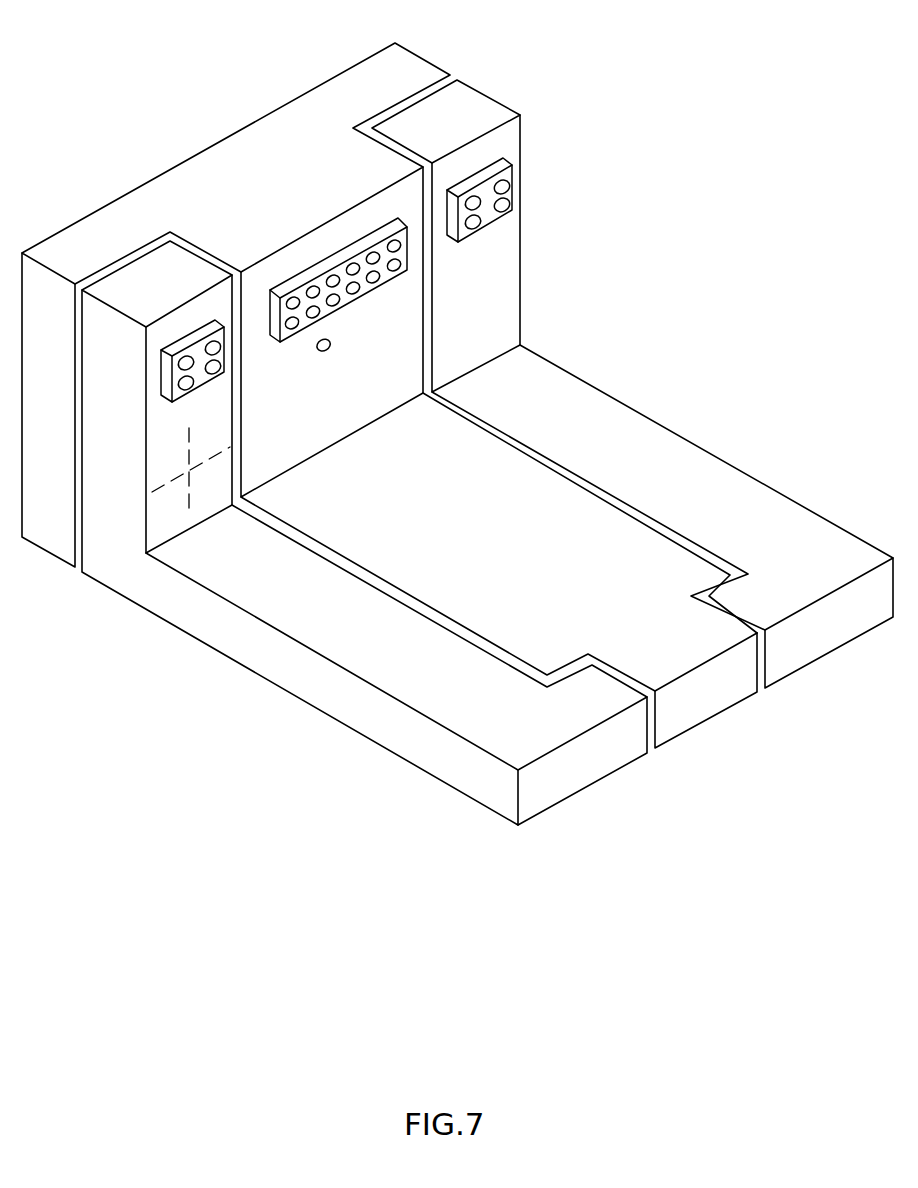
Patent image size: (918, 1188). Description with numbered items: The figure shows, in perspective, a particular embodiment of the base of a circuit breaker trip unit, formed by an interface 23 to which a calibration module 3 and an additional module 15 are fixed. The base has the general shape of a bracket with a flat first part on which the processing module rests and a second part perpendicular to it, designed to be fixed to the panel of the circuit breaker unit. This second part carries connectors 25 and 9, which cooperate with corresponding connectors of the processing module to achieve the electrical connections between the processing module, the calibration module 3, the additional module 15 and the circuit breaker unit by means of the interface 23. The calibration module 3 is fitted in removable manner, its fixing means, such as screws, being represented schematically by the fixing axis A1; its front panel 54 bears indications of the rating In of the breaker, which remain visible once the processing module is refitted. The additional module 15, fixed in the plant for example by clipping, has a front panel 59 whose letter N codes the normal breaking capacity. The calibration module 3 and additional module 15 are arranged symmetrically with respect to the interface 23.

The calibration module 3 is at (280, 672).
The connector 9 is at (285, 333).
The additional module 15 is at (633, 428).
The interface 23 is at (405, 65).
The connector 25 is at (221, 355).
The front panel 54 is at (532, 805).
The front panel 59 is at (782, 668).
The fixing axis A1 is at (189, 471).